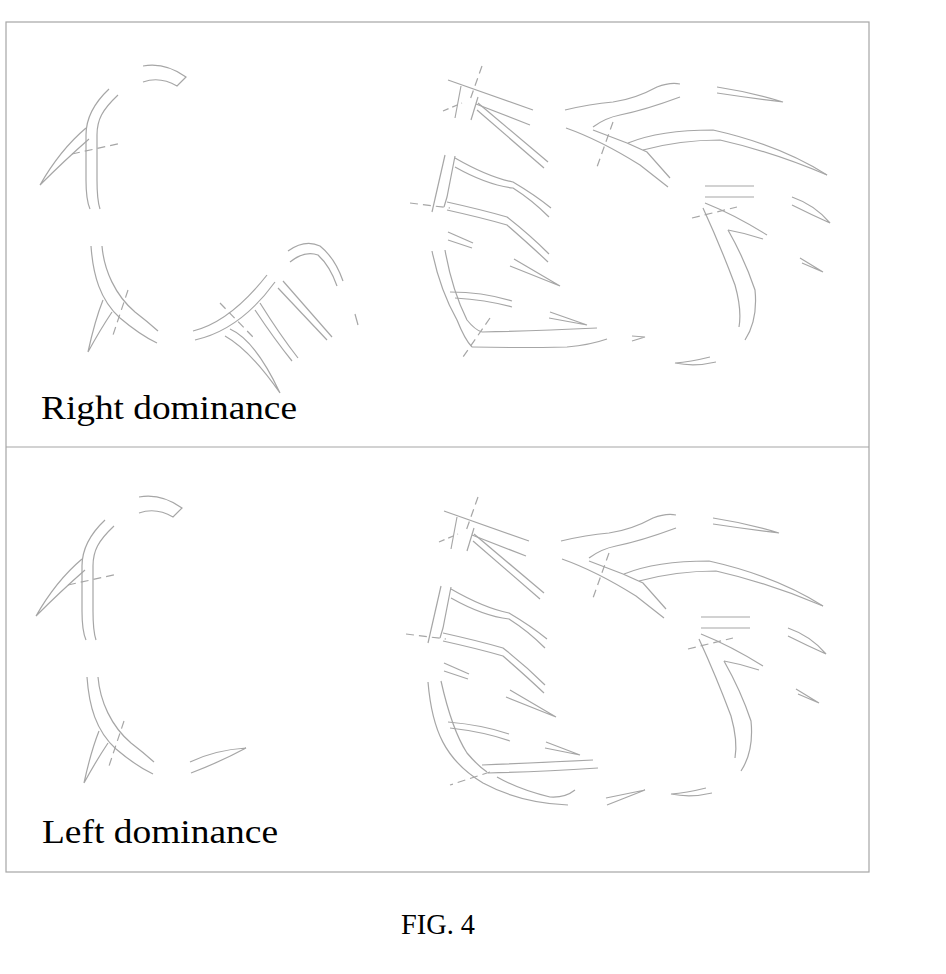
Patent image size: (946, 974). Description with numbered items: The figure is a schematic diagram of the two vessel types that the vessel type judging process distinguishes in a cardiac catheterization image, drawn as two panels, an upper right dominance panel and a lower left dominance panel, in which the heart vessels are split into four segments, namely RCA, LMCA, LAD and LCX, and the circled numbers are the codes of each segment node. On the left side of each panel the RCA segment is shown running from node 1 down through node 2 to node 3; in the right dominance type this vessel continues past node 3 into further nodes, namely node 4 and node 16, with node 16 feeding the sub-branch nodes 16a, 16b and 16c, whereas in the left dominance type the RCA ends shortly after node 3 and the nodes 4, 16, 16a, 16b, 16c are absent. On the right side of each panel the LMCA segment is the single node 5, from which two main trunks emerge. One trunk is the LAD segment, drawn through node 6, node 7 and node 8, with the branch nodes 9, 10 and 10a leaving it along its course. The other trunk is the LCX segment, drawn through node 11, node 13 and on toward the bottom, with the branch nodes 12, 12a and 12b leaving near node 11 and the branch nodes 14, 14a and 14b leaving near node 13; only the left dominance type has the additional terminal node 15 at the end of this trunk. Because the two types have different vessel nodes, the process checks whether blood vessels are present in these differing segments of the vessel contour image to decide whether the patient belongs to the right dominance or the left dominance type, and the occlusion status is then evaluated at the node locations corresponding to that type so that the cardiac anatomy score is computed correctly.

The RCA segment node 1 is at (111, 349).
The RCA segment node 2 is at (115, 495).
The RCA segment node 3 is at (213, 531).
The RCA segment node 4 is at (252, 361).
The LMCA segment node 5 is at (470, 311).
The LAD segment node 6 is at (597, 360).
The LAD segment node 7 is at (709, 472).
The LAD segment node 8 is at (706, 561).
The LAD segment node 9 is at (672, 314).
The LAD segment node 10 is at (727, 392).
The LAD segment node 10a is at (762, 453).
The LCX segment node 11 is at (453, 364).
The LCX segment node 12 is at (528, 360).
The LCX segment node 12a is at (519, 411).
The LCX segment node 12b is at (514, 456).
The LCX segment node 13 is at (490, 504).
The LCX segment node 14 is at (502, 474).
The LCX segment node 14a is at (517, 522).
The LCX segment node 14b is at (558, 540).
The LCX segment node 15 is at (606, 803).
The RCA segment node 16 is at (297, 262).
The RCA segment node 16a is at (288, 349).
The RCA segment node 16b is at (319, 326).
The RCA segment node 16c is at (352, 300).